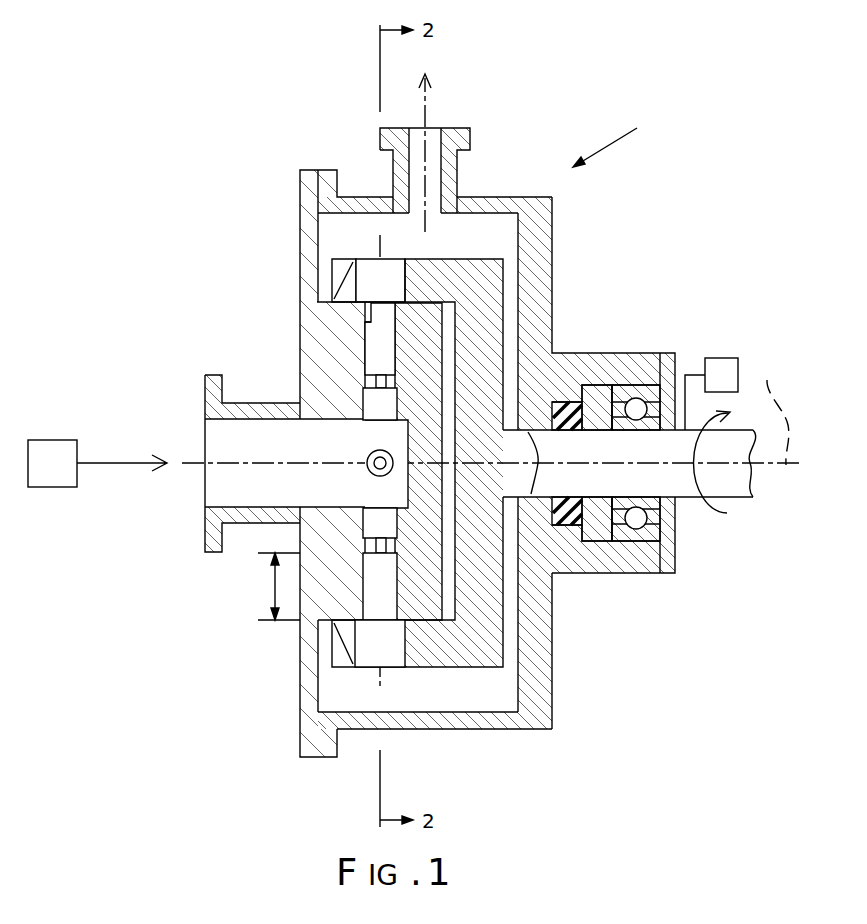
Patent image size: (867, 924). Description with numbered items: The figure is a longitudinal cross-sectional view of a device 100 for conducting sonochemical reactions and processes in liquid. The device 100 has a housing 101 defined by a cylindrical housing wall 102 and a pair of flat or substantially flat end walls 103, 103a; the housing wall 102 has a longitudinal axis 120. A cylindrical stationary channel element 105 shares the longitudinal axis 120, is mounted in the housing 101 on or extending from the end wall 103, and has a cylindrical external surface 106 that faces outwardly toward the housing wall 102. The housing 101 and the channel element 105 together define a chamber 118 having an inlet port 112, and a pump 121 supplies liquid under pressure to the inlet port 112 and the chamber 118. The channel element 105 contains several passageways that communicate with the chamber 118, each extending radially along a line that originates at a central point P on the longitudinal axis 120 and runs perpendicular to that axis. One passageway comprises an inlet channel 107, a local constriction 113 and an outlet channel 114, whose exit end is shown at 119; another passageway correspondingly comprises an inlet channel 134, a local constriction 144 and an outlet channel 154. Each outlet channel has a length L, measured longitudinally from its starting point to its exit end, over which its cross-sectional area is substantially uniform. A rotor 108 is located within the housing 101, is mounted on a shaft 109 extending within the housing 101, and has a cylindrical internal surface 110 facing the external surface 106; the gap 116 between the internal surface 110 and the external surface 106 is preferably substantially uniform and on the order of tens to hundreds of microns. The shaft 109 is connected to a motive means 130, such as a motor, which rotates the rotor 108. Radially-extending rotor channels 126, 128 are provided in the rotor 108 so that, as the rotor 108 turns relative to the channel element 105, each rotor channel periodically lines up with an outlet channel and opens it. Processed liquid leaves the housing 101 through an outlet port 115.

The device 100 is at (626, 136).
The housing 101 is at (532, 662).
The cylindrical housing wall 102 is at (467, 713).
The end wall 103 is at (305, 215).
The end wall 103a is at (520, 598).
The cylindrical stationary channel element 105 is at (332, 333).
The cylindrical external surface 106 is at (325, 305).
The inlet channel 107 is at (368, 398).
The rotor 108 is at (477, 303).
The shaft 109 is at (730, 478).
The cylindrical internal surface 110 is at (418, 623).
The inlet port 112 is at (230, 432).
The local constriction 113 is at (365, 380).
The outlet channel 114 is at (387, 347).
The outlet port 115 is at (433, 140).
The gap 116 is at (422, 303).
The chamber 118 is at (258, 490).
The exit end 119 is at (367, 322).
The longitudinal axis 120 is at (771, 409).
The pump 121 is at (45, 440).
The rotor channel 126 is at (370, 655).
The rotor channel 128 is at (392, 280).
The motive means 130 is at (718, 358).
The inlet channel 134 is at (375, 526).
The local constriction 144 is at (372, 595).
The outlet channel 154 is at (372, 548).
The central point P is at (375, 460).
The length L is at (277, 586).